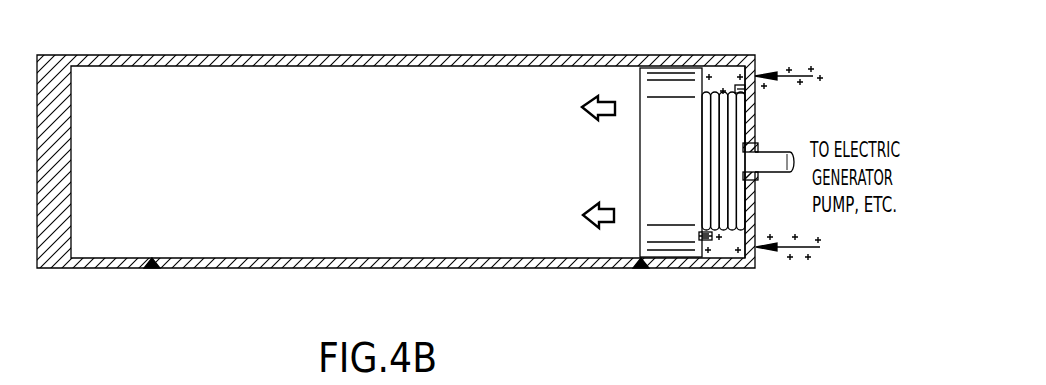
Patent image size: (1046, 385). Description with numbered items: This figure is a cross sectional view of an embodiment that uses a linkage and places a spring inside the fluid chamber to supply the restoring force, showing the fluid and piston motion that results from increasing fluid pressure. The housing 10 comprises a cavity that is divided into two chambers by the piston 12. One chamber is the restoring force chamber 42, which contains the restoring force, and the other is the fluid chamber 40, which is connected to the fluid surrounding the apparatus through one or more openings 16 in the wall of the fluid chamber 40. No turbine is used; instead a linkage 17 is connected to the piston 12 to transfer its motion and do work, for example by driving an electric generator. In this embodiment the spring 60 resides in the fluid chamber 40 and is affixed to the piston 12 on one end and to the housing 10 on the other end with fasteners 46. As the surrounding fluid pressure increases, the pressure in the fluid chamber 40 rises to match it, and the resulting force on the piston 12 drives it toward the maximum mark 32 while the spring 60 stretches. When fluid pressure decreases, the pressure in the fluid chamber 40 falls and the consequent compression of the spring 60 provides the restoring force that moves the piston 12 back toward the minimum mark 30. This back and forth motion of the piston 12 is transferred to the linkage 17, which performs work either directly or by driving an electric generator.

The housing 10 is at (455, 55).
The piston 12 is at (668, 68).
The openings 16 is at (756, 72).
The linkage 17 is at (760, 173).
The minimum mark 30 is at (640, 268).
The maximum mark 32 is at (152, 268).
The fluid chamber 40 is at (730, 268).
The restoring force chamber 42 is at (102, 75).
The fasteners 46 is at (737, 86).
The spring 60 is at (740, 118).